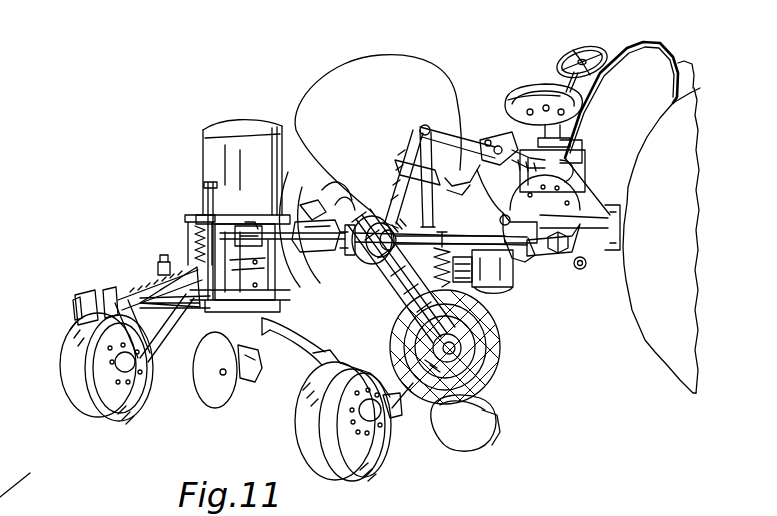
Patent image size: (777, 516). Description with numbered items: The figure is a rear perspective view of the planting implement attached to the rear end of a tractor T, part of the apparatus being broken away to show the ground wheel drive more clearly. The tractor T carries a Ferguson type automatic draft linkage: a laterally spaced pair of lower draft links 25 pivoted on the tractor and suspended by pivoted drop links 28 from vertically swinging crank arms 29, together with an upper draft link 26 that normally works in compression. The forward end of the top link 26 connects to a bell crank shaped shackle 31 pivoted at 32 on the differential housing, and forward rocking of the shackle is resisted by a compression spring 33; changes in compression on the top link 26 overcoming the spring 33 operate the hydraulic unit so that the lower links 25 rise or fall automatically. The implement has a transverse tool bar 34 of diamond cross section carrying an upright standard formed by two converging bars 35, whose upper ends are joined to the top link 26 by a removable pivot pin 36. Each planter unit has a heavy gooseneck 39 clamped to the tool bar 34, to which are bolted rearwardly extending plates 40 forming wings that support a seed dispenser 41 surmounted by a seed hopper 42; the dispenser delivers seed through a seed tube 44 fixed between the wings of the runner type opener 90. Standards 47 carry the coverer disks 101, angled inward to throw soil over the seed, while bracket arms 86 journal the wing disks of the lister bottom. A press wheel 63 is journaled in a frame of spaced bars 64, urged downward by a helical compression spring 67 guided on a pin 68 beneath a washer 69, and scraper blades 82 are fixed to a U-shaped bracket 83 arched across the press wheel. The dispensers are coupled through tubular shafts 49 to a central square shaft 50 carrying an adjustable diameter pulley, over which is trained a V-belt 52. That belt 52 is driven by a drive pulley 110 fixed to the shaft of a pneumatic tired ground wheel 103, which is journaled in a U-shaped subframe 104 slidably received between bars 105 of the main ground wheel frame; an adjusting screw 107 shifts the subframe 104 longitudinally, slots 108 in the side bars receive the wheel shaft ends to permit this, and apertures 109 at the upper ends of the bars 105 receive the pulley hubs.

The tractor T is at (660, 31).
The lower draft links 25 is at (583, 270).
The upper draft link 26 is at (450, 200).
The drop links 28 is at (467, 165).
The crank arms 29 is at (516, 98).
The shackle 31 is at (482, 140).
The shackle pivot 32 is at (503, 221).
The compression spring 33 is at (568, 167).
The transverse tool bar 34 is at (340, 205).
The standard bars 35 is at (396, 152).
The pivot pin 36 is at (438, 130).
The gooseneck 39 is at (287, 200).
The plates 40 is at (512, 270).
The seed dispenser 41 is at (256, 228).
The seed hopper 42 is at (215, 153).
The seed tube 44 is at (470, 287).
The standards 47 is at (163, 265).
The tubular shafts 49 is at (373, 259).
The square shaft 50 is at (330, 255).
The V-belt 52 is at (395, 226).
The press wheel 63 is at (52, 336).
The press wheel frame bars 64 is at (157, 283).
The helical compression spring 67 is at (196, 238).
The pin 68 is at (193, 220).
The washer 69 is at (195, 228).
The scraper blades 82 is at (95, 287).
The U-shaped supporting bracket 83 is at (397, 407).
The bracket arms 86 is at (298, 388).
The runner type opener 90 is at (262, 375).
The coverer disks 101 is at (203, 380).
The ground wheel 103 is at (493, 348).
The U-shaped subframe 104 is at (400, 318).
The ground wheel frame bars 105 is at (365, 262).
The adjusting screw 107 is at (375, 270).
The slots 108 is at (468, 332).
The apertures 109 is at (77, 515).
The drive pulley 110 is at (460, 356).